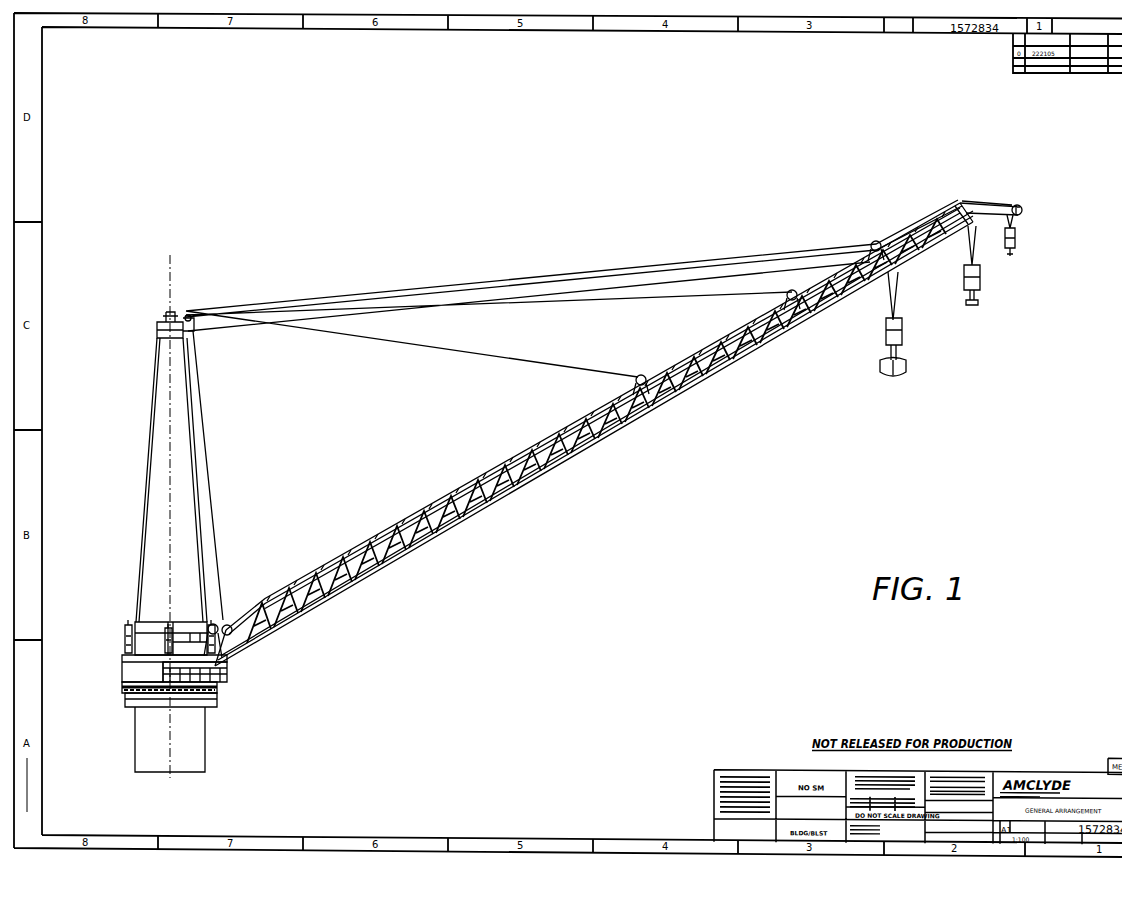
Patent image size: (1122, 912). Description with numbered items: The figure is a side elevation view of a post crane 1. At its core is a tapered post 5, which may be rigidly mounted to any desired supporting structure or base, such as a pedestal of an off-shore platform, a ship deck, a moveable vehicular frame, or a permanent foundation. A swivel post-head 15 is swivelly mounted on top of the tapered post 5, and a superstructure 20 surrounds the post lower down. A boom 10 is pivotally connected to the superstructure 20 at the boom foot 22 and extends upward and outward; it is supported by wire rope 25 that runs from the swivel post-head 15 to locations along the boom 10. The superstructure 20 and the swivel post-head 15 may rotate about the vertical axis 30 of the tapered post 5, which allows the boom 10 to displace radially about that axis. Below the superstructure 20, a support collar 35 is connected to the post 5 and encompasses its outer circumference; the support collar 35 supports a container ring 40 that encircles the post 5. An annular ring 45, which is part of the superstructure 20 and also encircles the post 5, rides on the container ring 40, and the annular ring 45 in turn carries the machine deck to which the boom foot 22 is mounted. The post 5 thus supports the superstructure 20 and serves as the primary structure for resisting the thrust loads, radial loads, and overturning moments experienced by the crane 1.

The post crane 1 is at (502, 163).
The tapered post 5 is at (191, 550).
The boom 10 is at (566, 478).
The swivel post-head 15 is at (156, 325).
The superstructure 20 is at (104, 660).
The boom foot 22 is at (216, 677).
The wire rope 25 is at (527, 272).
The vertical axis 30 is at (166, 467).
The support collar 35 is at (216, 699).
The container ring 40 is at (226, 687).
The annular ring 45 is at (127, 672).